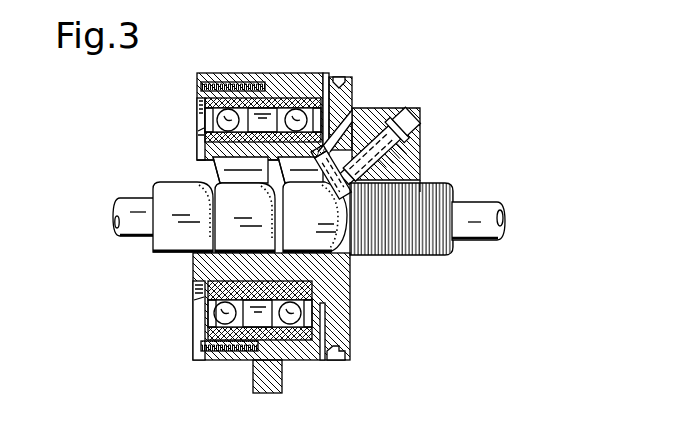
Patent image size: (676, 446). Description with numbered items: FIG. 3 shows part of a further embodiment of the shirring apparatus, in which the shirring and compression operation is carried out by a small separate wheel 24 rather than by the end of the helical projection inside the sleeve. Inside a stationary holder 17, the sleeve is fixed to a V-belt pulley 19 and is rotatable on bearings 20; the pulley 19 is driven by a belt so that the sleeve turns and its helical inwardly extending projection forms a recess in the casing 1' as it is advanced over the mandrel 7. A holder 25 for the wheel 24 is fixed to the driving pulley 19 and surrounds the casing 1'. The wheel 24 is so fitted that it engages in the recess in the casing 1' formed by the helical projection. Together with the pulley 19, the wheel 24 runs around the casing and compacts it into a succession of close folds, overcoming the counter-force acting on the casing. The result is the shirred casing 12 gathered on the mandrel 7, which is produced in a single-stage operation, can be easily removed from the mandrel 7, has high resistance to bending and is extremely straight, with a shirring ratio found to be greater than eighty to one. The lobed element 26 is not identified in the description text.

The casing 1' is at (139, 246).
The mandrel 7 is at (484, 209).
The shirred casing 12 is at (440, 256).
The holder 17 is at (272, 73).
The V-belt pulley 19 is at (350, 304).
The bearings 20 is at (214, 313).
The wheel 24 is at (352, 114).
The holder 25 is at (392, 110).
The cam lobe 26 is at (293, 216).